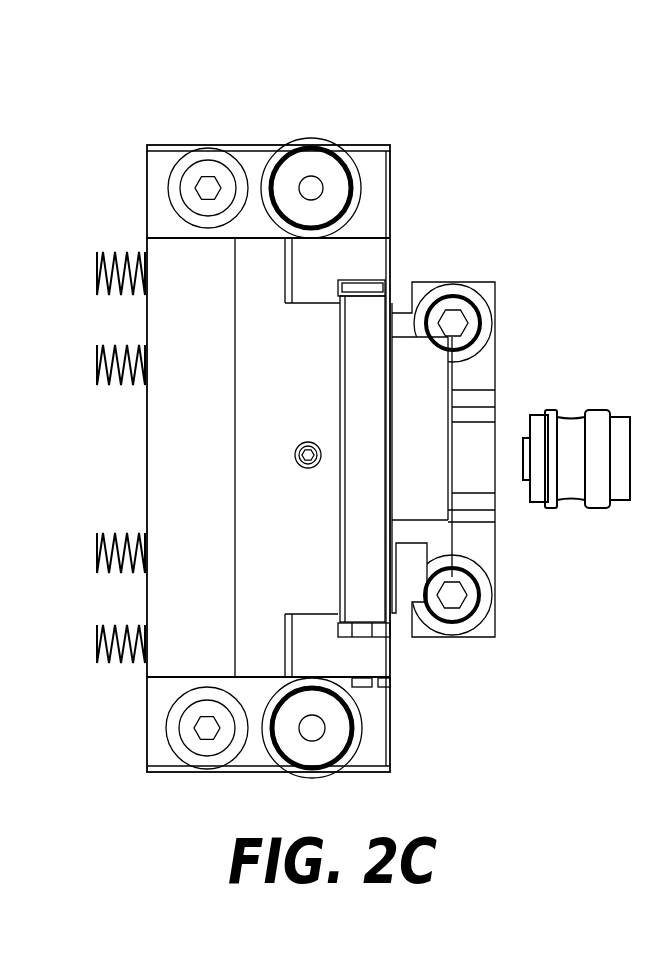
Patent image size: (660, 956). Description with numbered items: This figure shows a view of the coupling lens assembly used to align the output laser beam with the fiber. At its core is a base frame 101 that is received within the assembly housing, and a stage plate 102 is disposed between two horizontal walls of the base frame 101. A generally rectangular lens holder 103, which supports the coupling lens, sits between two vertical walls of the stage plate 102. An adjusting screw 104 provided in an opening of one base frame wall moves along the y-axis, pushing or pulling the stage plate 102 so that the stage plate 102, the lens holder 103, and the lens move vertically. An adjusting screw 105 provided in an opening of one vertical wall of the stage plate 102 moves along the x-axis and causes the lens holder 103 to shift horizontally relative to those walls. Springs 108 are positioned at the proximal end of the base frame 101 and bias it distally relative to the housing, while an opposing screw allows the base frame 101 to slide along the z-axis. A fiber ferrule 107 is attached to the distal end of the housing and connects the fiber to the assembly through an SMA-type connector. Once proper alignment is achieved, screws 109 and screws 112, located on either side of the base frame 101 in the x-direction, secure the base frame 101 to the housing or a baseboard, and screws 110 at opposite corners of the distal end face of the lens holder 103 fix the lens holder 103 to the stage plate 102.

The base frame 101 is at (212, 433).
The stage plate 102 is at (392, 253).
The lens holder 103 is at (443, 513).
The adjusting screw 104 is at (302, 442).
The adjusting screw 105 is at (378, 688).
The fiber ferrule 107 is at (575, 415).
The springs 108 is at (112, 252).
The screws 109 is at (198, 146).
The screws 110 is at (427, 325).
The screws 112 is at (362, 743).